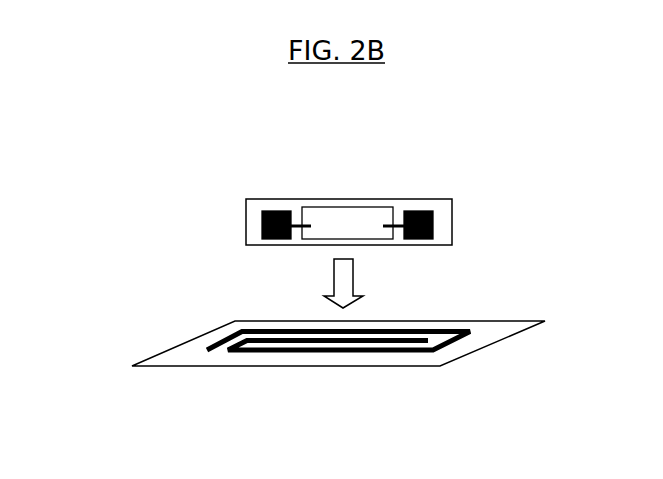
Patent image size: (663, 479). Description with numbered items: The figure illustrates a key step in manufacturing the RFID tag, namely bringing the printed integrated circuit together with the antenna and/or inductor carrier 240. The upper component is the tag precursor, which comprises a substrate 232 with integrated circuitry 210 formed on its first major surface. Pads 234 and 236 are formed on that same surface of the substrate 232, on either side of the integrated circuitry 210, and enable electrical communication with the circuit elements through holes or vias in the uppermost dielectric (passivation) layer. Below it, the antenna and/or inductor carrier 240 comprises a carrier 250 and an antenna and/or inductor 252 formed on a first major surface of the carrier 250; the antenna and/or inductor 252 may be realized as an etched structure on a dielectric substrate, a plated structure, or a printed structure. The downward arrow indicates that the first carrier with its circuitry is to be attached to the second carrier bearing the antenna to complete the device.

The integrated circuitry 210 is at (347, 212).
The substrate 232 is at (453, 229).
The pad 234 is at (279, 210).
The pad 236 is at (428, 210).
The antenna and/or inductor carrier 240 is at (168, 337).
The carrier 250 is at (478, 350).
The antenna and/or inductor 252 is at (453, 332).